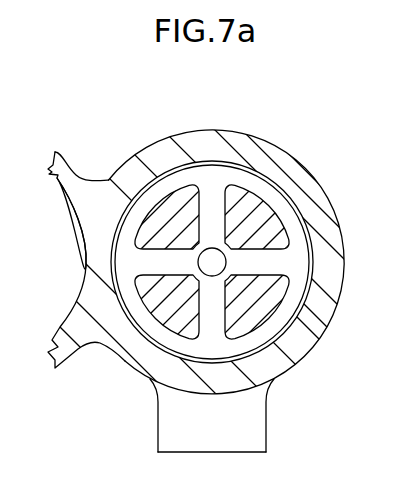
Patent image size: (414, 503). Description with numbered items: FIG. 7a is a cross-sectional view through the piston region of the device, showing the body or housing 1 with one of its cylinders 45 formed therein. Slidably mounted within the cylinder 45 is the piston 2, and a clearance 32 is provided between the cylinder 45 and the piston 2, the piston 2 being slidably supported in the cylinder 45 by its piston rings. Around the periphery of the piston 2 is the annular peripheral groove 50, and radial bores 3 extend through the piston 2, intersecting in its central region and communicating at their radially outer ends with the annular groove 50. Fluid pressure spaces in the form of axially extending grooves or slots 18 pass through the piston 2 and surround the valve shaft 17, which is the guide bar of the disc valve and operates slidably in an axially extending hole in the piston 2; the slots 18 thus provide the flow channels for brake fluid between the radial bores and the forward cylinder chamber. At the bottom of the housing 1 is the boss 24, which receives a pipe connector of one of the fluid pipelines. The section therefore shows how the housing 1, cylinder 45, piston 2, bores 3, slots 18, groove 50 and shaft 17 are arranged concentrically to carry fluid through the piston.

The housing 1 is at (130, 175).
The piston 2 is at (252, 190).
The radial bores 3 is at (214, 254).
The valve shaft 17 is at (214, 265).
The axially extending grooves or slots 18 is at (285, 197).
The boss 24 is at (163, 427).
The clearance 32 is at (165, 172).
The cylinder 45 is at (331, 321).
The annular peripheral groove 50 is at (300, 268).